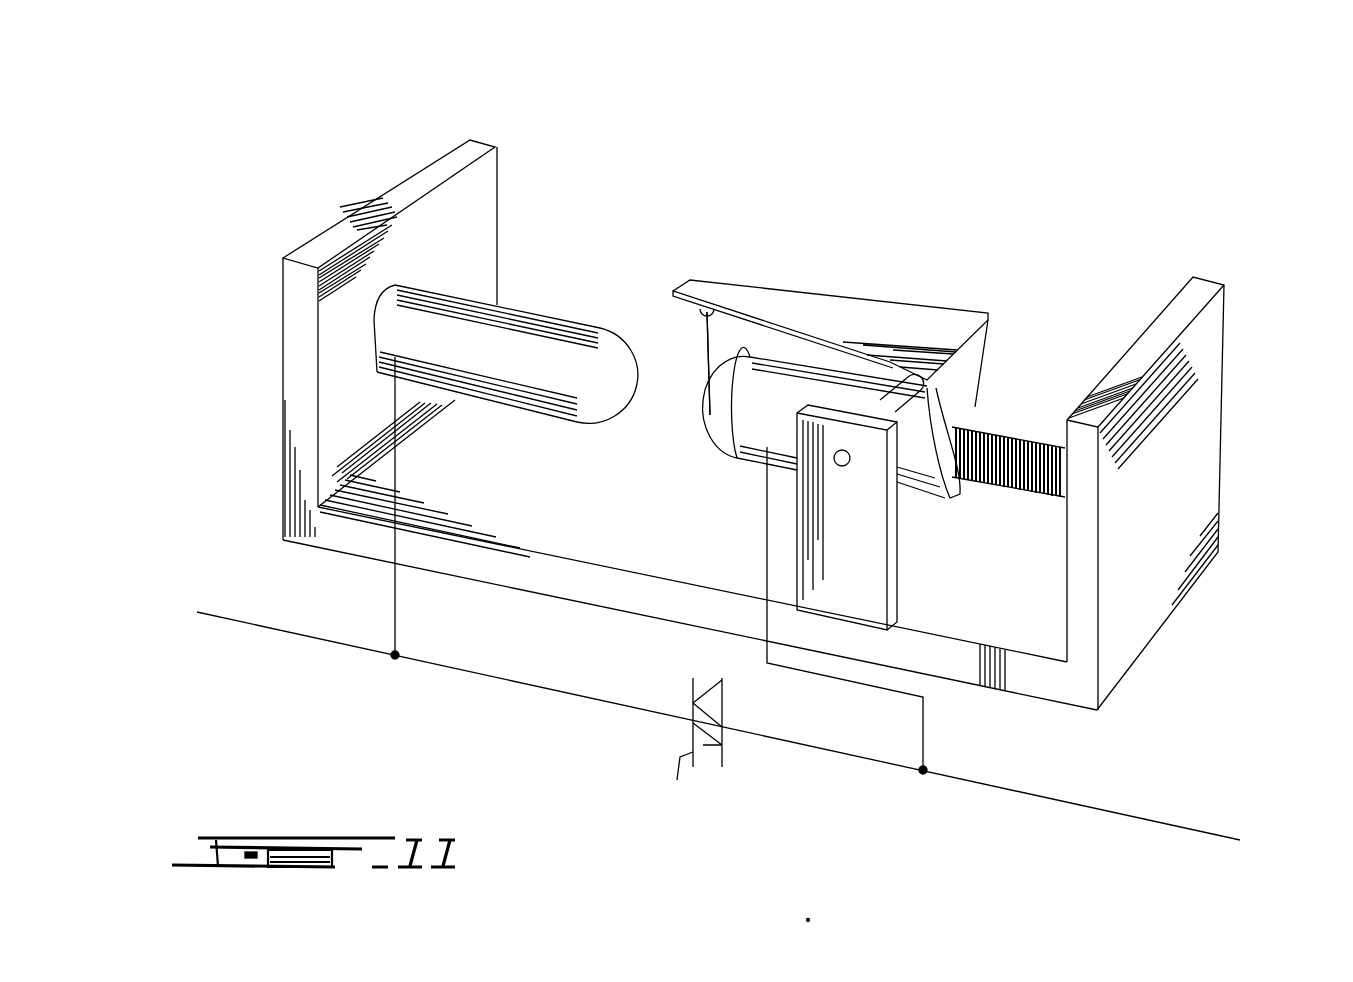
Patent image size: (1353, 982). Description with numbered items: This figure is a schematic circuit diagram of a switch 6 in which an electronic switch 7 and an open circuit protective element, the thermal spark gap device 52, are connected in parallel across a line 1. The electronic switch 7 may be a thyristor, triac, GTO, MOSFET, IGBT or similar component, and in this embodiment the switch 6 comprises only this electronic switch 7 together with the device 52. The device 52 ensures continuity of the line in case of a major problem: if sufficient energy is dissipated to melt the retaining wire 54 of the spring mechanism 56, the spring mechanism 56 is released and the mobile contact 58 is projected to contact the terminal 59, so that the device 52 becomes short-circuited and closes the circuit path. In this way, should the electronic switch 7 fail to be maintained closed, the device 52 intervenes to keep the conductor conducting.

The power line 1 is at (718, 726).
The switch 6 is at (1148, 688).
The electronic switch 7 is at (723, 745).
The thermal spark gap device 52 is at (614, 170).
The retaining wire 54 is at (695, 340).
The spring mechanism 56 is at (1045, 338).
The mobile contact 58 is at (727, 462).
The terminal 59 is at (523, 352).